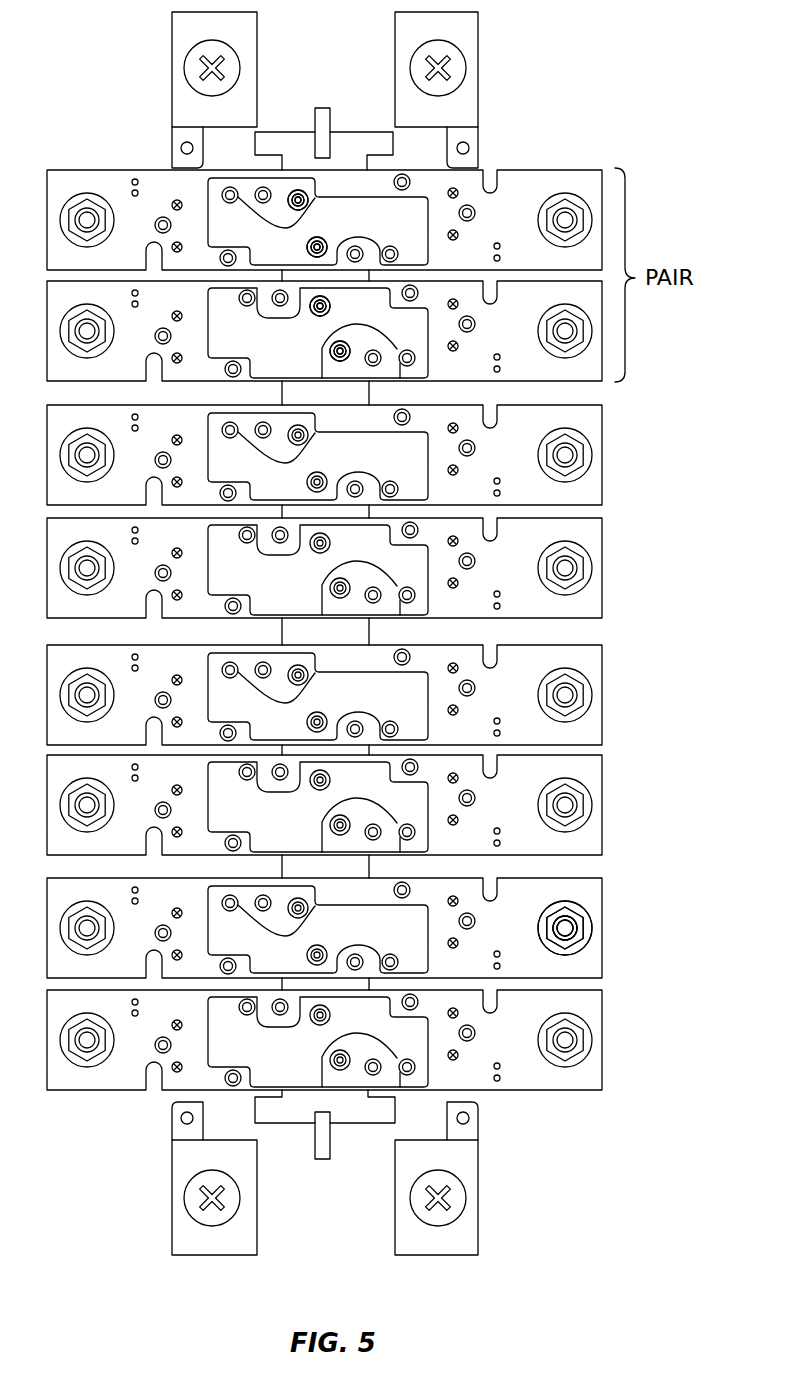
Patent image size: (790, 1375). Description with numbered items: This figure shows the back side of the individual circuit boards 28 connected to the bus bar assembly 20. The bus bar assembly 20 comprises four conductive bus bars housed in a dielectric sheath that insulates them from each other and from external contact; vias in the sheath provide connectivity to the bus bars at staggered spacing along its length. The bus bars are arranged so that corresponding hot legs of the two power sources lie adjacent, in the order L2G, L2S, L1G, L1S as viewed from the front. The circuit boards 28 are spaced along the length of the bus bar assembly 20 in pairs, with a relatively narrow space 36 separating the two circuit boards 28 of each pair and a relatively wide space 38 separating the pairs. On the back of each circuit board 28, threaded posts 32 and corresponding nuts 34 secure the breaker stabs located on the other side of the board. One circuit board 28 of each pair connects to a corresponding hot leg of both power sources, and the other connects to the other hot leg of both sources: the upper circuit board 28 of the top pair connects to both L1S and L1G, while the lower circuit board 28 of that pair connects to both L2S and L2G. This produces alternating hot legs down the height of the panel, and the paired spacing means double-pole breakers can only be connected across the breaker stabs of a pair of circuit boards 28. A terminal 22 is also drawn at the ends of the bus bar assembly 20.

The bus bar assembly 20 is at (340, 1110).
The terminal 22 is at (450, 1168).
The circuit board 28 is at (563, 1077).
The threaded post 32 is at (570, 925).
The nut 34 is at (577, 940).
The narrow space 36 is at (626, 743).
The wide space 38 is at (626, 630).
The L1 solar bus bar L1S is at (297, 196).
The L1 grid bus bar L1G is at (318, 240).
The L2 solar bus bar L2S is at (313, 313).
The L2 grid bus bar L2G is at (346, 343).